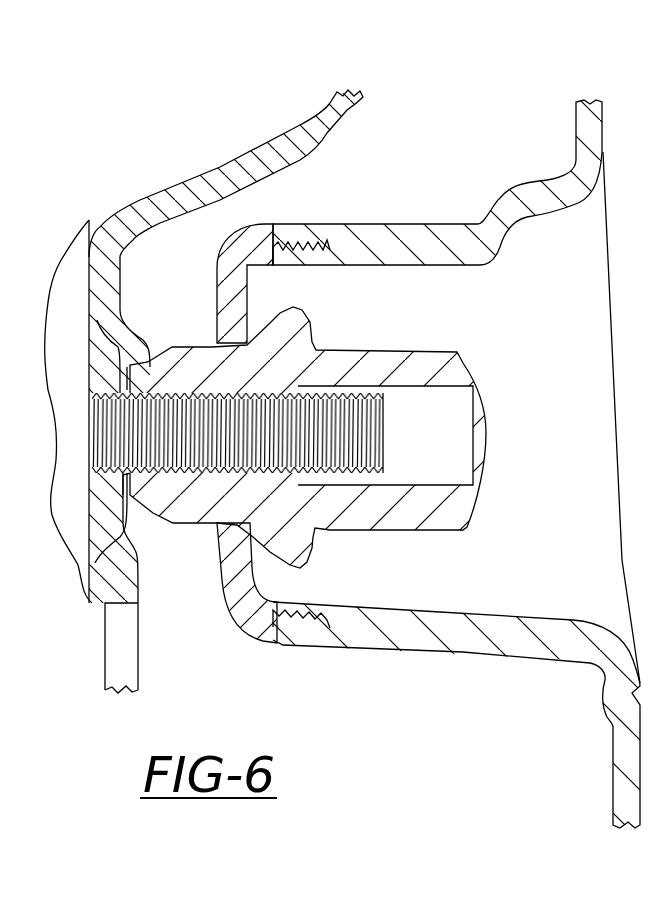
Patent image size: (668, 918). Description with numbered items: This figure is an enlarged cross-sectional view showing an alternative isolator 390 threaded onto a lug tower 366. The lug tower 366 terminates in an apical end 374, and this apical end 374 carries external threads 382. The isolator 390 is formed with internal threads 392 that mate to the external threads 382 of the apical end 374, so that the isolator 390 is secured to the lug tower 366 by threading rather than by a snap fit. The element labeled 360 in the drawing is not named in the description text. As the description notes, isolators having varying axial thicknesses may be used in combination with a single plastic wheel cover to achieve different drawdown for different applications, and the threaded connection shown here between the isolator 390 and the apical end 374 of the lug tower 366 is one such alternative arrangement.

The wheel hub flange 360 is at (598, 137).
The lug tower 366 is at (500, 635).
The apical end 374 is at (350, 627).
The external threads 382 is at (307, 630).
The isolator 390 is at (230, 607).
The internal threads 392 is at (310, 602).